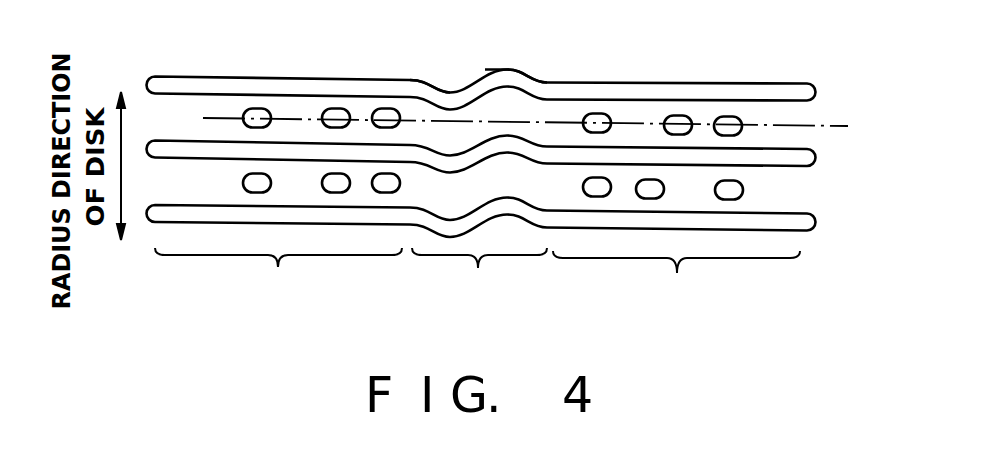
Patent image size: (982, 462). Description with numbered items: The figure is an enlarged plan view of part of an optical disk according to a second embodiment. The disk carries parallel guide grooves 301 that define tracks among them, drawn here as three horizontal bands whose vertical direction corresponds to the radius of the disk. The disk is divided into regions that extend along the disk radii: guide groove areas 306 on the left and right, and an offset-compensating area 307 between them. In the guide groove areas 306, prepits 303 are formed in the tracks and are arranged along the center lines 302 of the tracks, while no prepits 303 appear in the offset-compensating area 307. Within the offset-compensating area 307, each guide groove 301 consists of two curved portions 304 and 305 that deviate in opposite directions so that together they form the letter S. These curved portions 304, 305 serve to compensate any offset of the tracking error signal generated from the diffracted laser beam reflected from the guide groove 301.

The guide groove 301 is at (616, 84).
The center line 302 is at (826, 125).
The prepits 303 is at (679, 116).
The curved portion 304 is at (437, 89).
The curved portion 305 is at (533, 74).
The guide groove area 306 is at (477, 278).
The offset-compensating area 307 is at (479, 277).